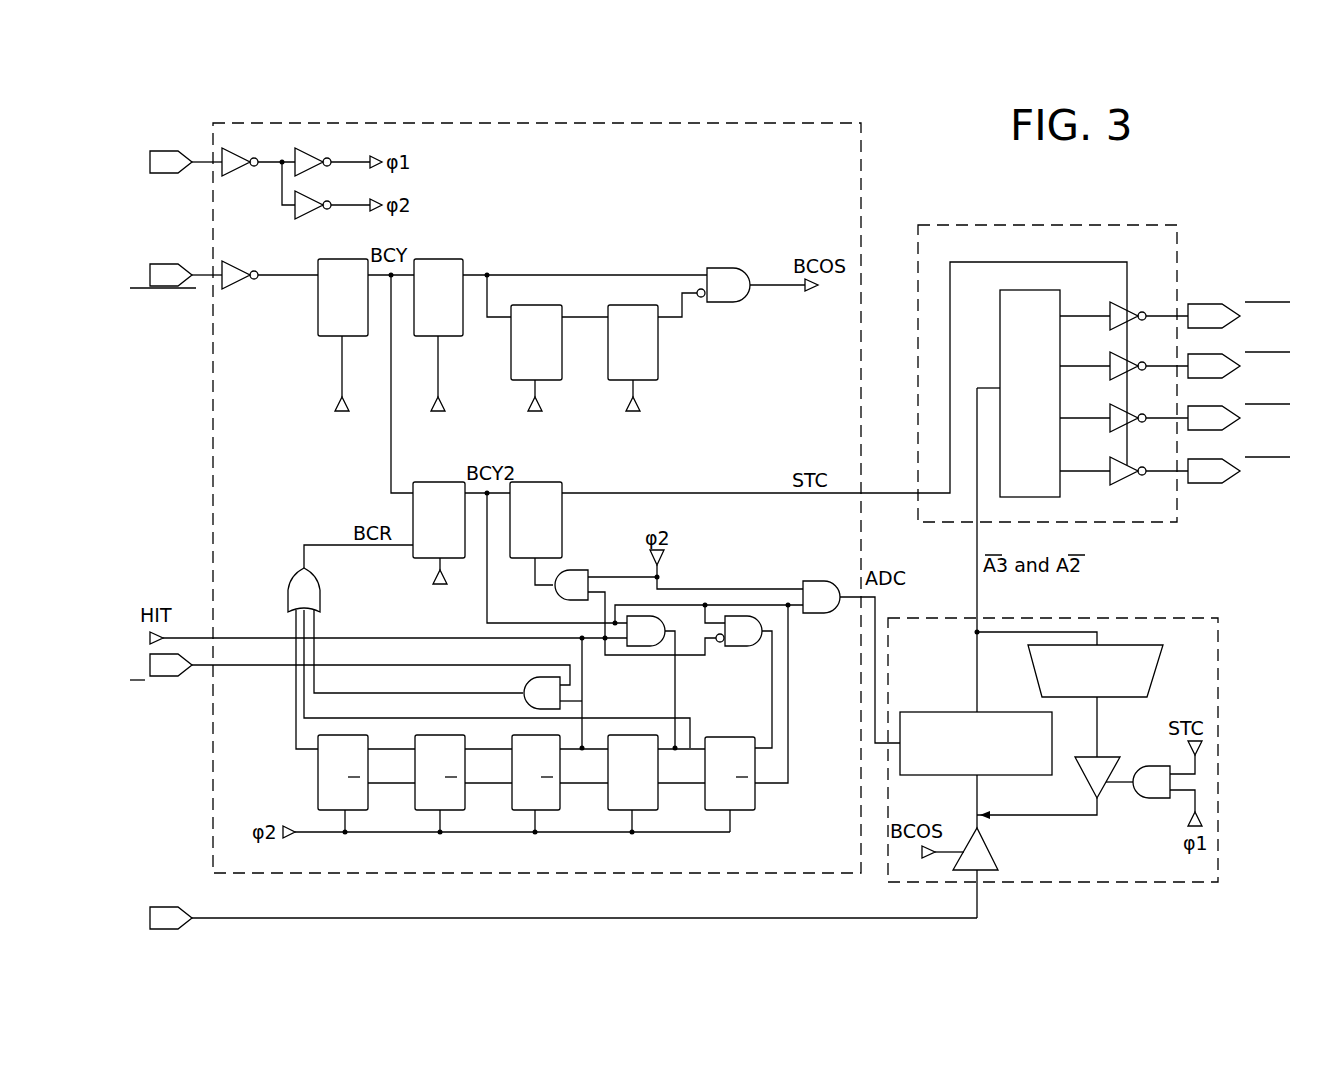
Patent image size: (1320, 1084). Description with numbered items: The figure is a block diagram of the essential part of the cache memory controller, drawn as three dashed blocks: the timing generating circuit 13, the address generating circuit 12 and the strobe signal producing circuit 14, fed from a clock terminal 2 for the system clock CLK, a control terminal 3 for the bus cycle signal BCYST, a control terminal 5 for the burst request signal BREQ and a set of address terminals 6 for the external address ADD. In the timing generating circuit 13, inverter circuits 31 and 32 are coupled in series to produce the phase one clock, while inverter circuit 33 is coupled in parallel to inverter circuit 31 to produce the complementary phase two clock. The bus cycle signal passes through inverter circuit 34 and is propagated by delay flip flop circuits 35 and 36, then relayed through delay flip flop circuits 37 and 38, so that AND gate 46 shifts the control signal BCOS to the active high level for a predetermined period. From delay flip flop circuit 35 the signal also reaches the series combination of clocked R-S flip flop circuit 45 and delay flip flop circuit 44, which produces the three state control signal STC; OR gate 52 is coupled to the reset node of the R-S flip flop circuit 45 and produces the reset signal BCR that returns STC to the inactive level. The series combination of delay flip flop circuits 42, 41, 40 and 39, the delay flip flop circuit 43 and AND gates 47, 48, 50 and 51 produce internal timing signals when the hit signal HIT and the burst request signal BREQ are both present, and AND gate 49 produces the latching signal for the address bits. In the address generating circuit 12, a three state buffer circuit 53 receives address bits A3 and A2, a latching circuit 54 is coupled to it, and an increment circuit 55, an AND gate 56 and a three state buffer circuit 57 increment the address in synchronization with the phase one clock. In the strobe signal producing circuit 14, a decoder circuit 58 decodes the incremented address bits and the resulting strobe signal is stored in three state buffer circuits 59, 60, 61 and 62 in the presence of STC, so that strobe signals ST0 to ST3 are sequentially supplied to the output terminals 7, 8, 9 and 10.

The clock terminal 2 is at (156, 150).
The control terminal 3 is at (158, 263).
The control terminal 5 is at (150, 657).
The address terminals 6 is at (160, 907).
The output terminal 7 is at (1206, 304).
The output terminal 8 is at (1188, 354).
The output terminal 9 is at (1188, 406).
The output terminal 10 is at (1208, 483).
The address generating circuit 12 is at (1125, 618).
The timing generating circuit 13 is at (861, 125).
The strobe signal producing circuit 14 is at (1037, 225).
The inverter circuit 31 is at (246, 156).
The inverter circuit 32 is at (316, 156).
The inverter circuit 33 is at (320, 218).
The inverter circuit 34 is at (244, 262).
The delay flip flop circuit 35 is at (318, 320).
The delay flip flop circuit 36 is at (420, 340).
The delay flip flop circuit 37 is at (511, 362).
The delay flip flop circuit 38 is at (658, 368).
The delay flip flop circuit 39 is at (318, 792).
The delay flip flop circuit 40 is at (415, 810).
The delay flip flop circuit 41 is at (512, 810).
The delay flip flop circuit 42 is at (608, 810).
The delay flip flop circuit 43 is at (730, 737).
The delay flip flop circuit 44 is at (530, 482).
The clocked R-S flip flop circuit 45 is at (422, 482).
The AND gate 46 is at (740, 268).
The AND gate 47 is at (562, 696).
The AND gate 48 is at (584, 570).
The AND gate 49 is at (822, 581).
The AND gate 50 is at (645, 646).
The AND gate 51 is at (745, 646).
The OR gate 52 is at (290, 580).
The three state buffer circuit 53 is at (992, 858).
The latching circuit 54 is at (955, 712).
The increment circuit 55 is at (1152, 672).
The AND gate 56 is at (1155, 798).
The three state buffer circuit 57 is at (1108, 757).
The decoder circuit 58 is at (1000, 306).
The three state buffer circuit 59 is at (1110, 306).
The three state buffer circuit 60 is at (1110, 358).
The three state buffer circuit 61 is at (1110, 408).
The three state buffer circuit 62 is at (1110, 461).